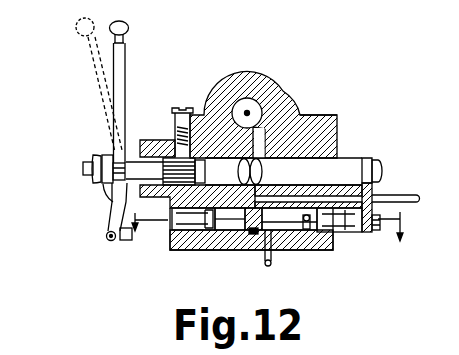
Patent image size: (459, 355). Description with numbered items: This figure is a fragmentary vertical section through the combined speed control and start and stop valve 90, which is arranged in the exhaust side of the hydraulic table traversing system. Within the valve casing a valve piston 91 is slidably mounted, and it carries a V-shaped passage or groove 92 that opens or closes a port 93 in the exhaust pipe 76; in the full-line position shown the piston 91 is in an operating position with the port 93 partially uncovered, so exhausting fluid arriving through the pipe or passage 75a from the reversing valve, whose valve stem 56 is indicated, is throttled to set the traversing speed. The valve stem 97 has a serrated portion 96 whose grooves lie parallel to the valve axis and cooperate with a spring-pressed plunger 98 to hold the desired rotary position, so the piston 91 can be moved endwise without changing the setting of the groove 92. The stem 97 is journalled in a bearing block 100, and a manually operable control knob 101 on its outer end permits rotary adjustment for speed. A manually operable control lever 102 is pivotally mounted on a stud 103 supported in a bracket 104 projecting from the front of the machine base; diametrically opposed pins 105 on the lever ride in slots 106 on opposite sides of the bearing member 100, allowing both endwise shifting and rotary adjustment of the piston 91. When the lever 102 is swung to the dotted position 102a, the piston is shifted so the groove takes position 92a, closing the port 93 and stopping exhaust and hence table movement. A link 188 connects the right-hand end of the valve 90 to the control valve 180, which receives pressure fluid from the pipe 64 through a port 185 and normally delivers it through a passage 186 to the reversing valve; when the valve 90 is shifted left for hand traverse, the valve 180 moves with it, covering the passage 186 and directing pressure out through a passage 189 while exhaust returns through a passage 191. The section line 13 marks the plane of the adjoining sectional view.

The section line 13- 13 is at (276, 227).
The valve stem 56 is at (247, 113).
The pipe 64 is at (272, 264).
The pipe or passage 75a is at (264, 132).
The exhaust pipe 76 is at (416, 198).
The combined speed control and start and stop valve 90 is at (334, 152).
The valve piston 91 is at (352, 160).
The V-shaped passage or groove 92 is at (293, 115).
The V-shaped groove stop position 92a is at (245, 235).
The port 93 is at (263, 187).
The serrated portion 96 is at (166, 159).
The valve stem 97 is at (137, 166).
The spring-pressed plunger 98 is at (186, 108).
The bearing block 100 is at (102, 196).
The manually operable control knob 101 is at (86, 166).
The manually operable control lever 102 is at (126, 60).
The control lever stop position 102a is at (86, 55).
The stud 103 is at (108, 240).
The bracket 104 is at (126, 240).
The pins 105 is at (112, 146).
The slots 106 is at (115, 204).
The control valve 180 is at (339, 236).
The port 185 is at (264, 264).
The passage 186 is at (313, 252).
The link 188 is at (377, 192).
The passage 189 is at (243, 263).
The passage 191 is at (182, 250).